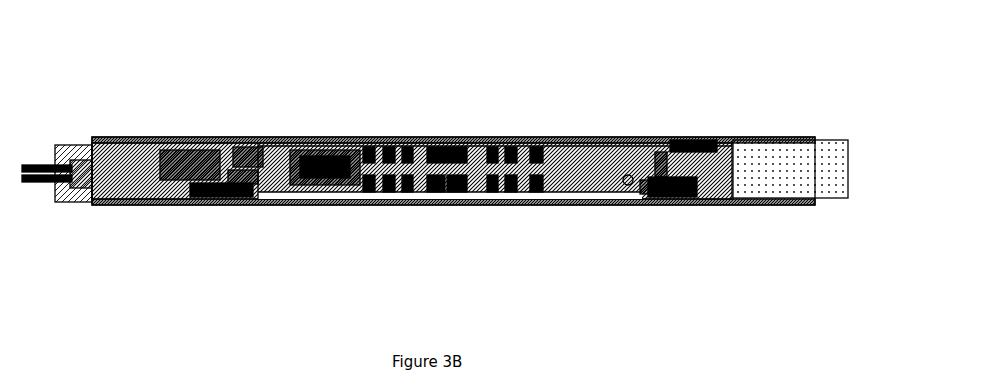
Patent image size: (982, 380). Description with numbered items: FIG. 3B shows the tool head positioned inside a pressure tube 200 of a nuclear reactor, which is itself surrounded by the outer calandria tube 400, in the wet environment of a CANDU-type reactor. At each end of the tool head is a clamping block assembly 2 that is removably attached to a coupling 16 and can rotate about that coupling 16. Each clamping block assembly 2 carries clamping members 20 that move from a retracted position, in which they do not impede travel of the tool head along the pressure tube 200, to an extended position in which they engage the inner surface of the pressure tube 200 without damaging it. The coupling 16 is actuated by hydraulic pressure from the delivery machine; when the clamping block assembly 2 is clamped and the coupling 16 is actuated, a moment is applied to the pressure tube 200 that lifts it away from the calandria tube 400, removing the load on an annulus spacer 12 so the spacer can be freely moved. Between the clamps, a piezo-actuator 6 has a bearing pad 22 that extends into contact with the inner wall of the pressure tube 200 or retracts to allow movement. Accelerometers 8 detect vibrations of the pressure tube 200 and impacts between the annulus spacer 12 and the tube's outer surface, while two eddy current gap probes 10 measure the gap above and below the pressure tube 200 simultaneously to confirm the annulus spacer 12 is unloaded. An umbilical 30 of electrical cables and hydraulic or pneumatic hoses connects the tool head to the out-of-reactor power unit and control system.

The clamping block assembly 2 is at (205, 157).
The piezo-actuator 6 is at (318, 183).
The accelerometer 8 is at (407, 192).
The eddy current gap probe 10 is at (432, 192).
The annulus spacer 12 is at (392, 132).
The coupling 16 is at (240, 197).
The clamping member 20 is at (210, 200).
The bearing pad 22 is at (289, 138).
The umbilical 30 is at (36, 162).
The pressure tube 200 is at (82, 136).
The calandria tube 400 is at (146, 133).